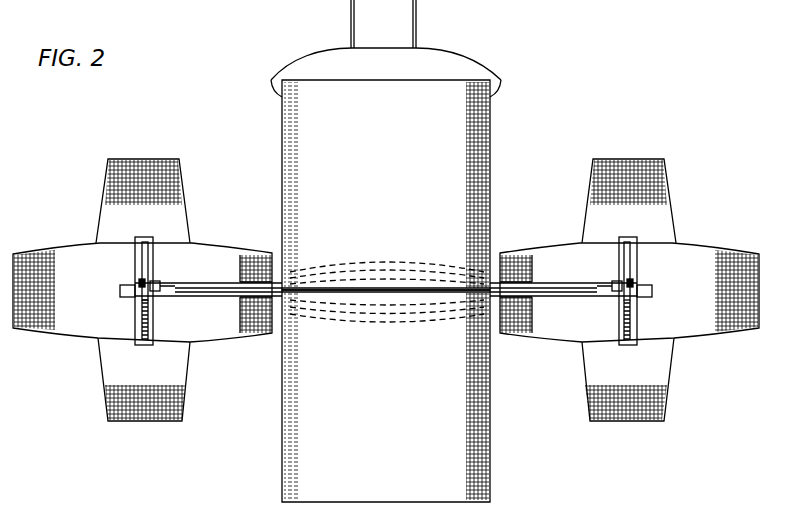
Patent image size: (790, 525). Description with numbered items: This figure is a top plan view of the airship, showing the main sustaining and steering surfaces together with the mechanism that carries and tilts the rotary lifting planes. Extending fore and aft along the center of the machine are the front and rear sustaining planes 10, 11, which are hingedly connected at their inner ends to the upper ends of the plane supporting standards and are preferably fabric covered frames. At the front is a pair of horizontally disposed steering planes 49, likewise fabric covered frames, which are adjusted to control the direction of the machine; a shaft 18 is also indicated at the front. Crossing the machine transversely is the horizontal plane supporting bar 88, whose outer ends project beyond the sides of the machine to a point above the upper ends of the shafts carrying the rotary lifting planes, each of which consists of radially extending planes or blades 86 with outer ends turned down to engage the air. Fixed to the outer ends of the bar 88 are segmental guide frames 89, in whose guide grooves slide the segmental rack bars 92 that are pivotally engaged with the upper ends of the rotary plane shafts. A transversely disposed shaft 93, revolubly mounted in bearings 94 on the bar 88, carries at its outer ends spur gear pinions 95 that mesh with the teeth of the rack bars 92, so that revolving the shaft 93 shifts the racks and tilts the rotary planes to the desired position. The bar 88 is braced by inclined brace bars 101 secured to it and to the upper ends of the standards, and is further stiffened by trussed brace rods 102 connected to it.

The front sustaining plane 10 is at (386, 185).
The rear sustaining plane 11 is at (386, 395).
The shaft 18 is at (412, 32).
The horizontally disposed steering planes 49 is at (483, 68).
The radially extending planes or blades 86 is at (157, 170).
The plane supporting bar 88 is at (203, 296).
The segmental guide frames 89 is at (135, 263).
The segmental rack bars 92 is at (142, 312).
The transversely disposed shaft 93 is at (180, 284).
The bearings 94 is at (170, 277).
The spur gear pinions 95 is at (142, 284).
The inclined brace bars 101 is at (245, 290).
The trussed brace rods 102 is at (384, 286).